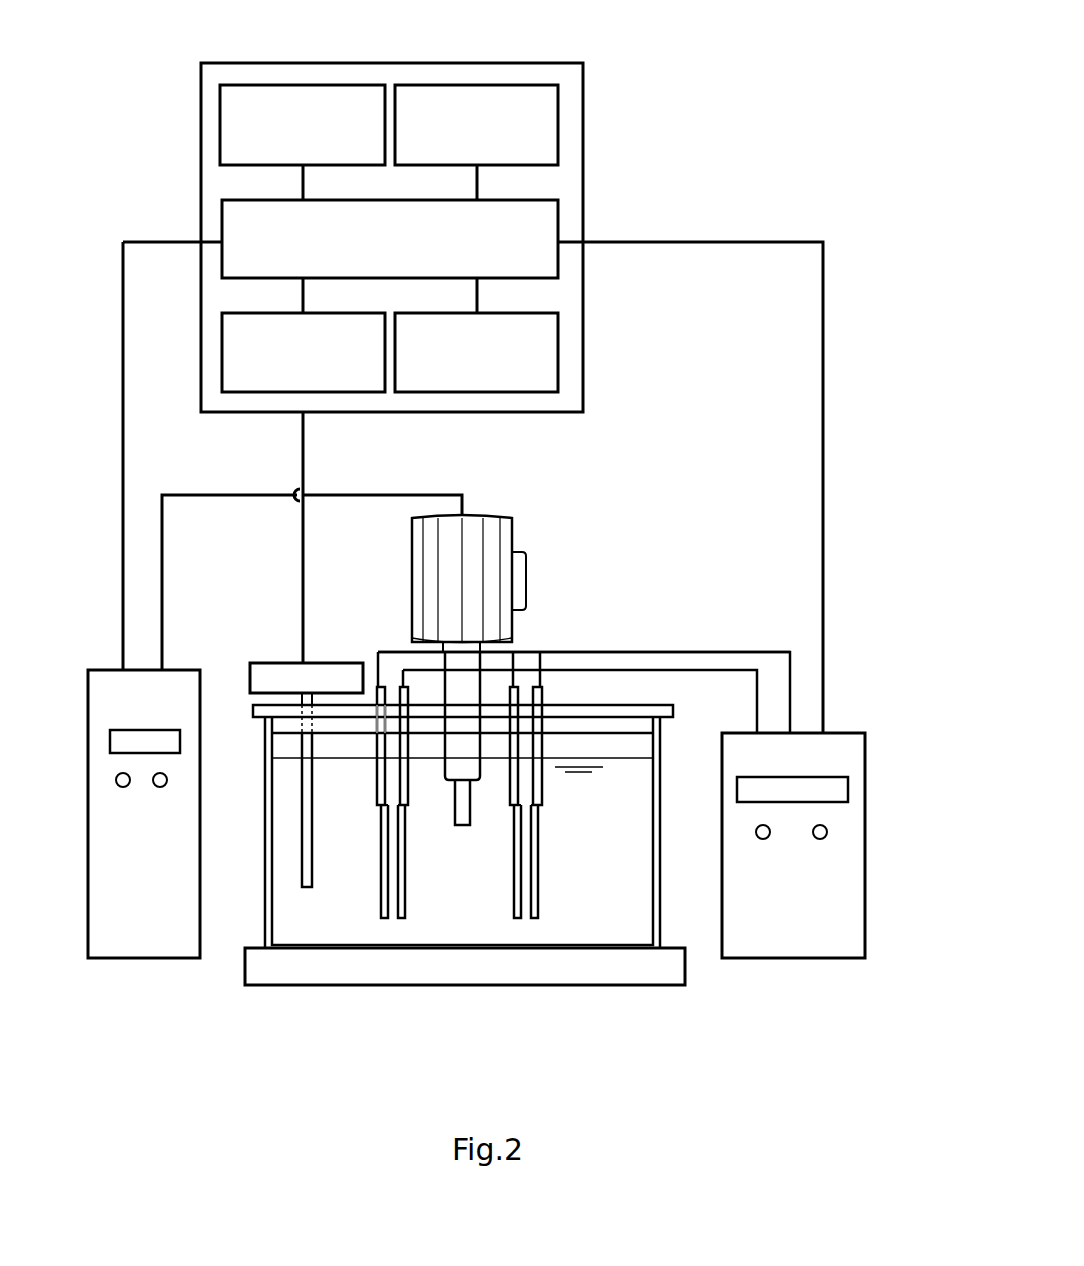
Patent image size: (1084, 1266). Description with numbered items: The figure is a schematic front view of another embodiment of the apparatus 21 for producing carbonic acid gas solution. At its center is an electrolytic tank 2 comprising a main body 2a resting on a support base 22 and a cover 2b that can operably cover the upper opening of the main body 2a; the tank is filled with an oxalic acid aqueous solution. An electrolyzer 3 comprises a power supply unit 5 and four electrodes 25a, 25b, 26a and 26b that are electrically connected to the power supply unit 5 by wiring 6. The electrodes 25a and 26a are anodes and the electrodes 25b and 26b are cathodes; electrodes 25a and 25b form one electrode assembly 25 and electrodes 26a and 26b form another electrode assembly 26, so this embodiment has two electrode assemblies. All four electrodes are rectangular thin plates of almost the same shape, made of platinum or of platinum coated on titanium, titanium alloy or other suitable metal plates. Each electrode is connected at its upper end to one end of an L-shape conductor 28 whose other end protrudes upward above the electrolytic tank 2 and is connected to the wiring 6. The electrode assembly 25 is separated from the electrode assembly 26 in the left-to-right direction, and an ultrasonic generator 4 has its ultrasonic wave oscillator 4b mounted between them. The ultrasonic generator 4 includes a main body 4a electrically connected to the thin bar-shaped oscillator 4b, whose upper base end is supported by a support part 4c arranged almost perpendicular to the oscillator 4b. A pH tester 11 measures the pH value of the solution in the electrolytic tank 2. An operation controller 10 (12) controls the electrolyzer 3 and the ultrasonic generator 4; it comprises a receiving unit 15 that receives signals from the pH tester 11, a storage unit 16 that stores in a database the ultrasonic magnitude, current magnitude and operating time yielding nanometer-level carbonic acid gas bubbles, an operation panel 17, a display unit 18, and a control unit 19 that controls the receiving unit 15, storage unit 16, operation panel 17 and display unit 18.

The operation controller 10 is at (592, 58).
The operation controller 12 is at (592, 58).
The display unit 18 is at (305, 83).
The operation panel 17 is at (495, 83).
The control unit 19 is at (515, 197).
The receiving unit 15 is at (283, 393).
The storage unit 16 is at (478, 393).
The ultrasonic generator 4 is at (139, 777).
The main body 4a is at (180, 668).
The ultrasonic wave oscillator 4b is at (463, 830).
The support part 4c is at (512, 535).
The electrolyzer 3 is at (814, 812).
The power supply unit 5 is at (865, 848).
The wiring 6 is at (717, 650).
The apparatus for producing carbonic acid gas solution 21 is at (658, 632).
The pH tester 11 is at (328, 663).
The electrolytic tank 2 is at (489, 832).
The main body of the electrolytic tank 2a is at (662, 884).
The cover 2b is at (660, 705).
The support base 22 is at (650, 972).
The electrode assembly 25 is at (397, 884).
The electrode 25a is at (402, 920).
The electrode 25b is at (385, 920).
The electrode assembly 26 is at (529, 884).
The electrode 26a is at (512, 920).
The electrode 26b is at (537, 920).
The L-shape conductor 28 is at (375, 785).